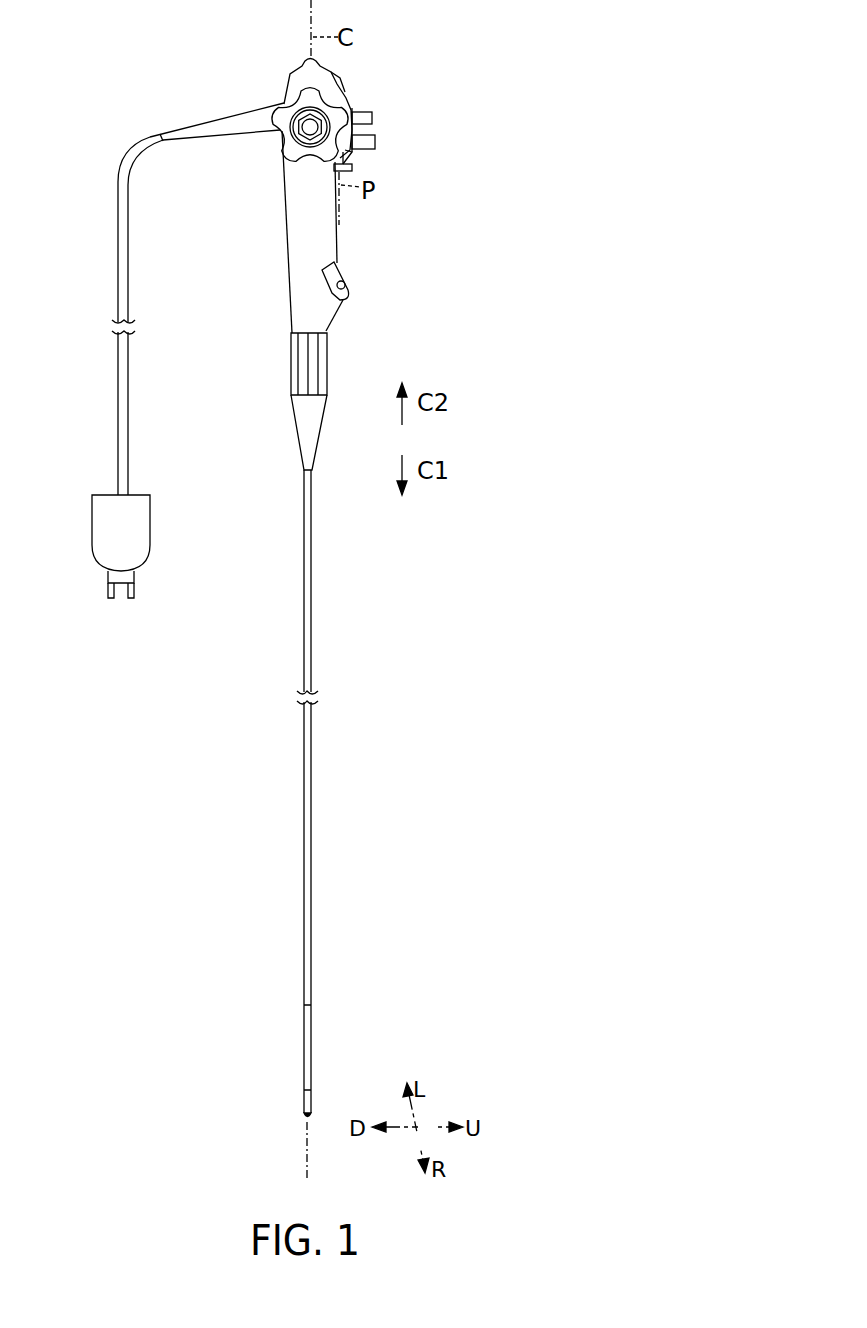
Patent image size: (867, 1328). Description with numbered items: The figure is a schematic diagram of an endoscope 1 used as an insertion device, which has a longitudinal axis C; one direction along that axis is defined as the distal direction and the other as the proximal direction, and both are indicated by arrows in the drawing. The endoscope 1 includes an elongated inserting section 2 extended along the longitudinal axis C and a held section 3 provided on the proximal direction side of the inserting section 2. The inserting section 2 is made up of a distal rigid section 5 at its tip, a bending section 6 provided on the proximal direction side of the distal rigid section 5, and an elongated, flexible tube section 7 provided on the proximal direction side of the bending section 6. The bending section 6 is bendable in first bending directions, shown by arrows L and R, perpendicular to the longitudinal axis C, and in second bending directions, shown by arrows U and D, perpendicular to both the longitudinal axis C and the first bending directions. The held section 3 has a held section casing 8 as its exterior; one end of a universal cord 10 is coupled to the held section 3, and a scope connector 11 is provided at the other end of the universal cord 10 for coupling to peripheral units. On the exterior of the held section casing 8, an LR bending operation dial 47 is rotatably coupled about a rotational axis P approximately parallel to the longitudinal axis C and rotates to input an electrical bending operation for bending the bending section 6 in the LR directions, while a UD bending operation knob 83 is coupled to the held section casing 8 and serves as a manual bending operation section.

The endoscope 1 is at (492, 64).
The inserting section 2 is at (318, 656).
The held section 3 is at (326, 241).
The distal rigid section 5 is at (307, 1101).
The bending section 6 is at (307, 1050).
The flexible tube section 7 is at (310, 792).
The held section casing 8 is at (287, 200).
The universal cord 10 is at (140, 132).
The scope connector 11 is at (140, 522).
The LR bending operation dial 47 is at (353, 171).
The UD bending operation knob 83 is at (284, 105).